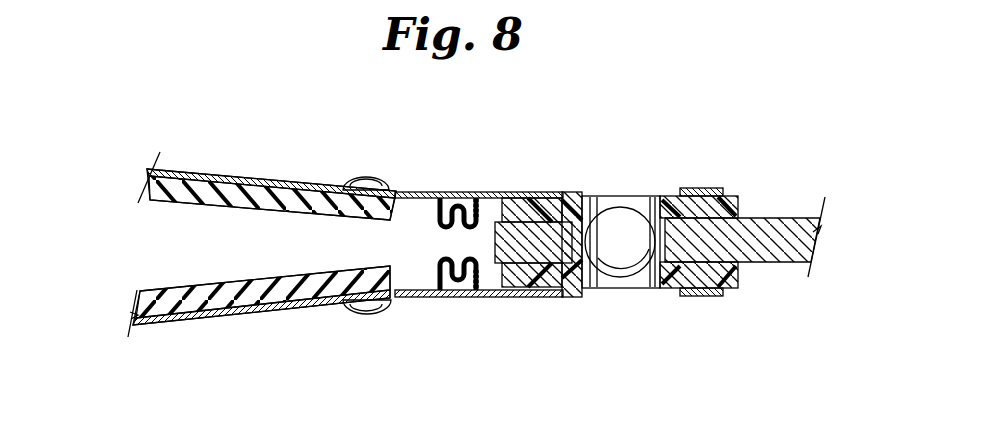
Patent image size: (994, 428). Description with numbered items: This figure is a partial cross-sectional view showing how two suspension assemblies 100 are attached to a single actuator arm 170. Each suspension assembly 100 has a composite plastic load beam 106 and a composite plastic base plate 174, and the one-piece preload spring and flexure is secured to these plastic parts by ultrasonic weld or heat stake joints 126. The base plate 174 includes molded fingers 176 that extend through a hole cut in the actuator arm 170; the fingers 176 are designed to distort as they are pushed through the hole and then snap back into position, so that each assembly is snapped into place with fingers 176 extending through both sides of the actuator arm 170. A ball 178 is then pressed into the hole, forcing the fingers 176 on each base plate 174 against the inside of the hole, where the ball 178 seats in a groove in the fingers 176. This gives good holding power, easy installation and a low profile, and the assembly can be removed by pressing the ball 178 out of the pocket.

The suspension assembly 100 is at (196, 140).
The composite plastic load beam 106 is at (172, 200).
The ultrasonic weld or heat stake joints 126 is at (366, 178).
The actuator arm 170 is at (778, 218).
The composite plastic base plate 174 is at (742, 178).
The molded fingers 176 is at (574, 193).
The ball 178 is at (625, 212).